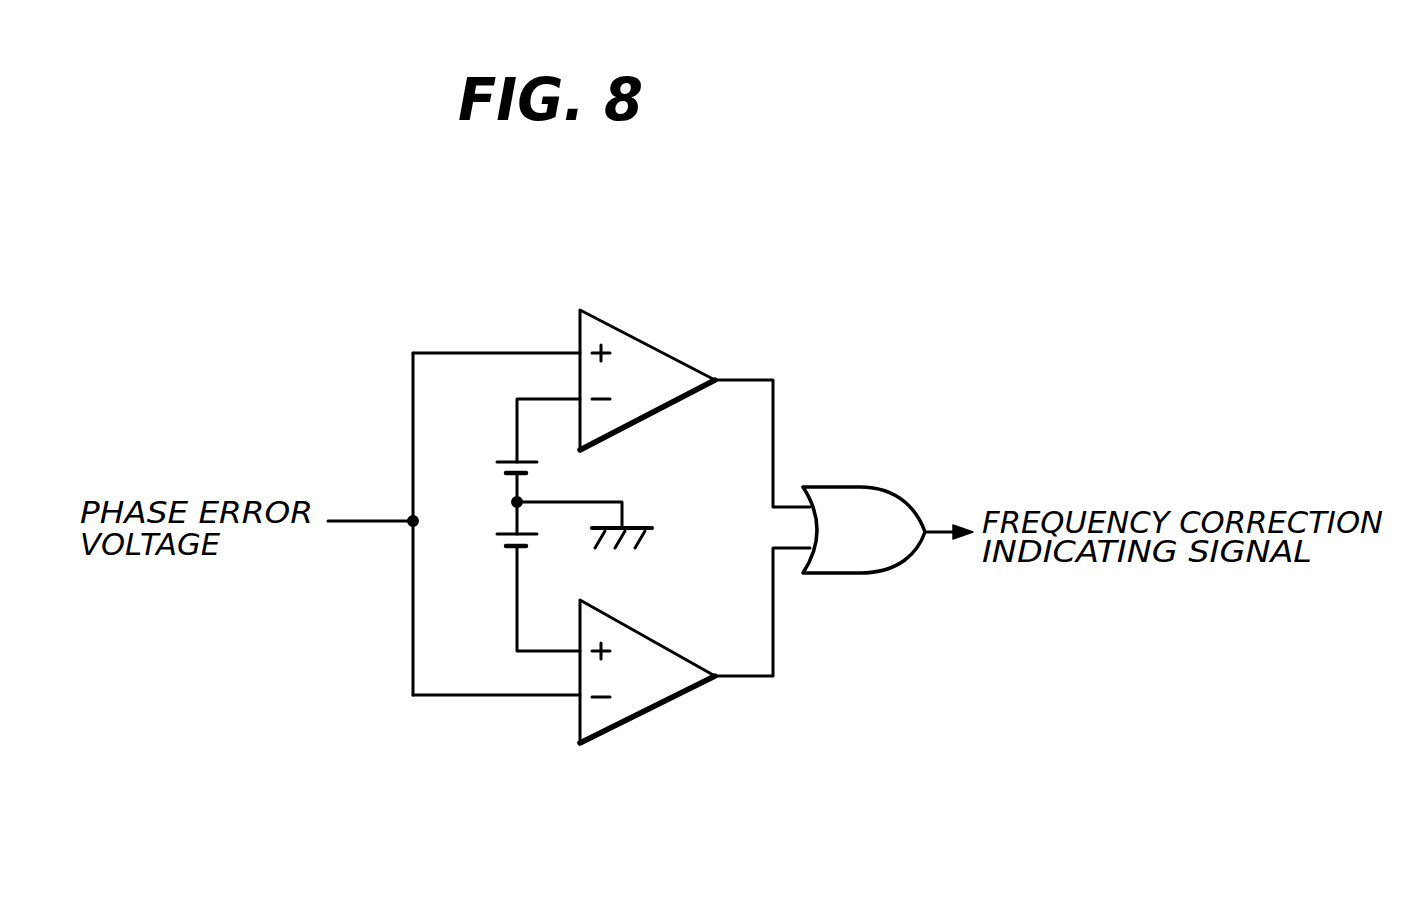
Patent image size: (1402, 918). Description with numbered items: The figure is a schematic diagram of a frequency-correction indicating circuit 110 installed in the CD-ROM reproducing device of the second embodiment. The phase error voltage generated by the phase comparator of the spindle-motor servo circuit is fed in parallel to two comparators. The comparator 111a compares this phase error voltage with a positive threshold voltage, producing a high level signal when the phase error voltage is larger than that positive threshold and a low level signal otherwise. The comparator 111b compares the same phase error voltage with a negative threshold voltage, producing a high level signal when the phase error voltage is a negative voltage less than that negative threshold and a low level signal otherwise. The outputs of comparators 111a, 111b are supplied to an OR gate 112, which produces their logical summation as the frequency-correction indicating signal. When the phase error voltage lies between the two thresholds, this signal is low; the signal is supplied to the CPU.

The frequency-correction indicating circuit 110 is at (870, 352).
The comparator 111a is at (640, 336).
The comparator 111b is at (652, 710).
The OR gate 112 is at (862, 487).